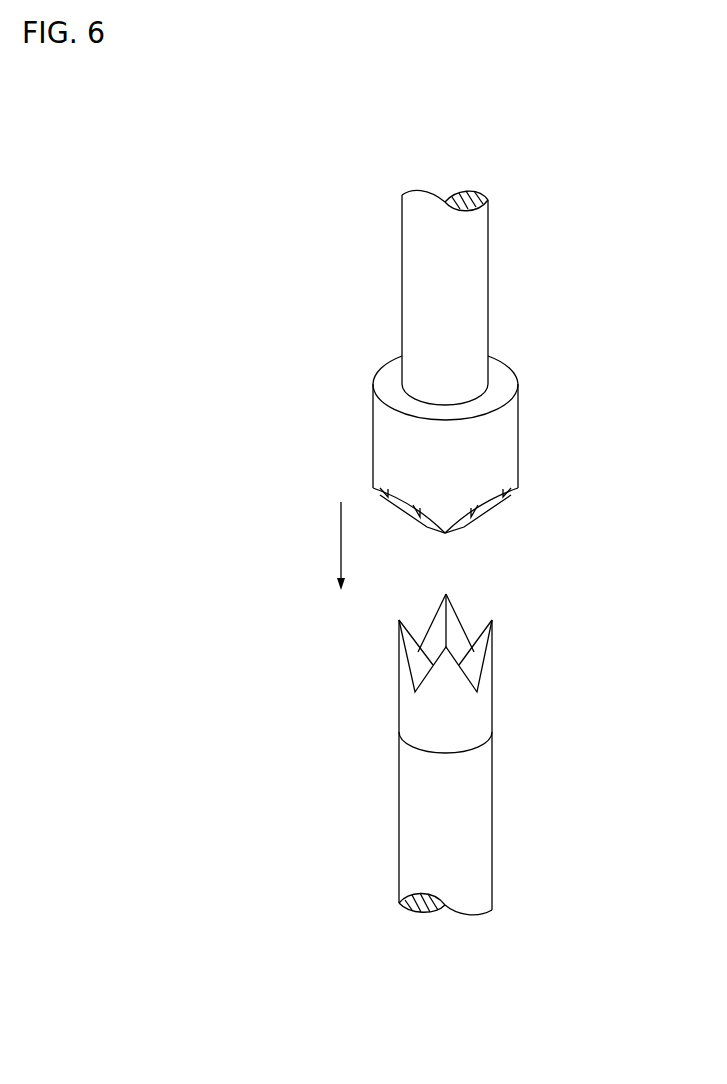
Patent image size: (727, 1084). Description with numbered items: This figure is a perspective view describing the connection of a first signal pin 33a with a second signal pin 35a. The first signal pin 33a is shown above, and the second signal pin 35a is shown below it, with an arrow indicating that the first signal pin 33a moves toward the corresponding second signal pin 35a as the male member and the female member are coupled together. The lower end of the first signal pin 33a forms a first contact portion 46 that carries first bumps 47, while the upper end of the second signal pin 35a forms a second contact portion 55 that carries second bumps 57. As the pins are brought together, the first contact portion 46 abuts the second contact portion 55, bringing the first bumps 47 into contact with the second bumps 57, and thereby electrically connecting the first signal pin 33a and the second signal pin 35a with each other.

The first signal pin 33a is at (533, 392).
The first contact portion 46 is at (521, 493).
The first bump 47 is at (403, 512).
The second contact portion 55 is at (444, 664).
The second bump 57 is at (455, 622).
The second signal pin 35a is at (500, 817).